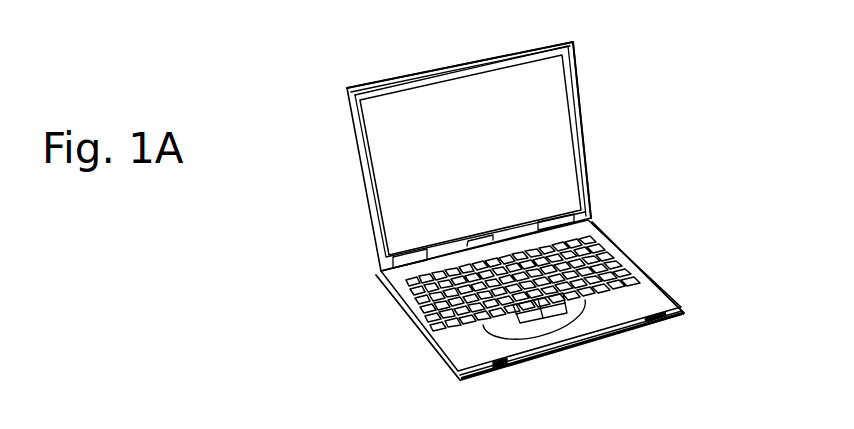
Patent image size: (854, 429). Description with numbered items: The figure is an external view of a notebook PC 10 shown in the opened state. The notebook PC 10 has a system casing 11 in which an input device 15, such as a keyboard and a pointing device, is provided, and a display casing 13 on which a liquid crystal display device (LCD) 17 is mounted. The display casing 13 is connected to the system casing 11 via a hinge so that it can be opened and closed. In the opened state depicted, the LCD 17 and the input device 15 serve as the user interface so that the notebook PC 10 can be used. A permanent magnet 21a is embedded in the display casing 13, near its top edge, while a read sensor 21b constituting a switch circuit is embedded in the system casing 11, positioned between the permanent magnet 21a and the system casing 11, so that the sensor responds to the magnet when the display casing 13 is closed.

The notebook PC 10 is at (645, 56).
The system casing 11 is at (623, 255).
The display casing 13 is at (579, 50).
The input device 15 is at (421, 329).
The liquid crystal display device 17 is at (390, 198).
The permanent magnet 21a is at (426, 75).
The read sensor 21b is at (523, 357).